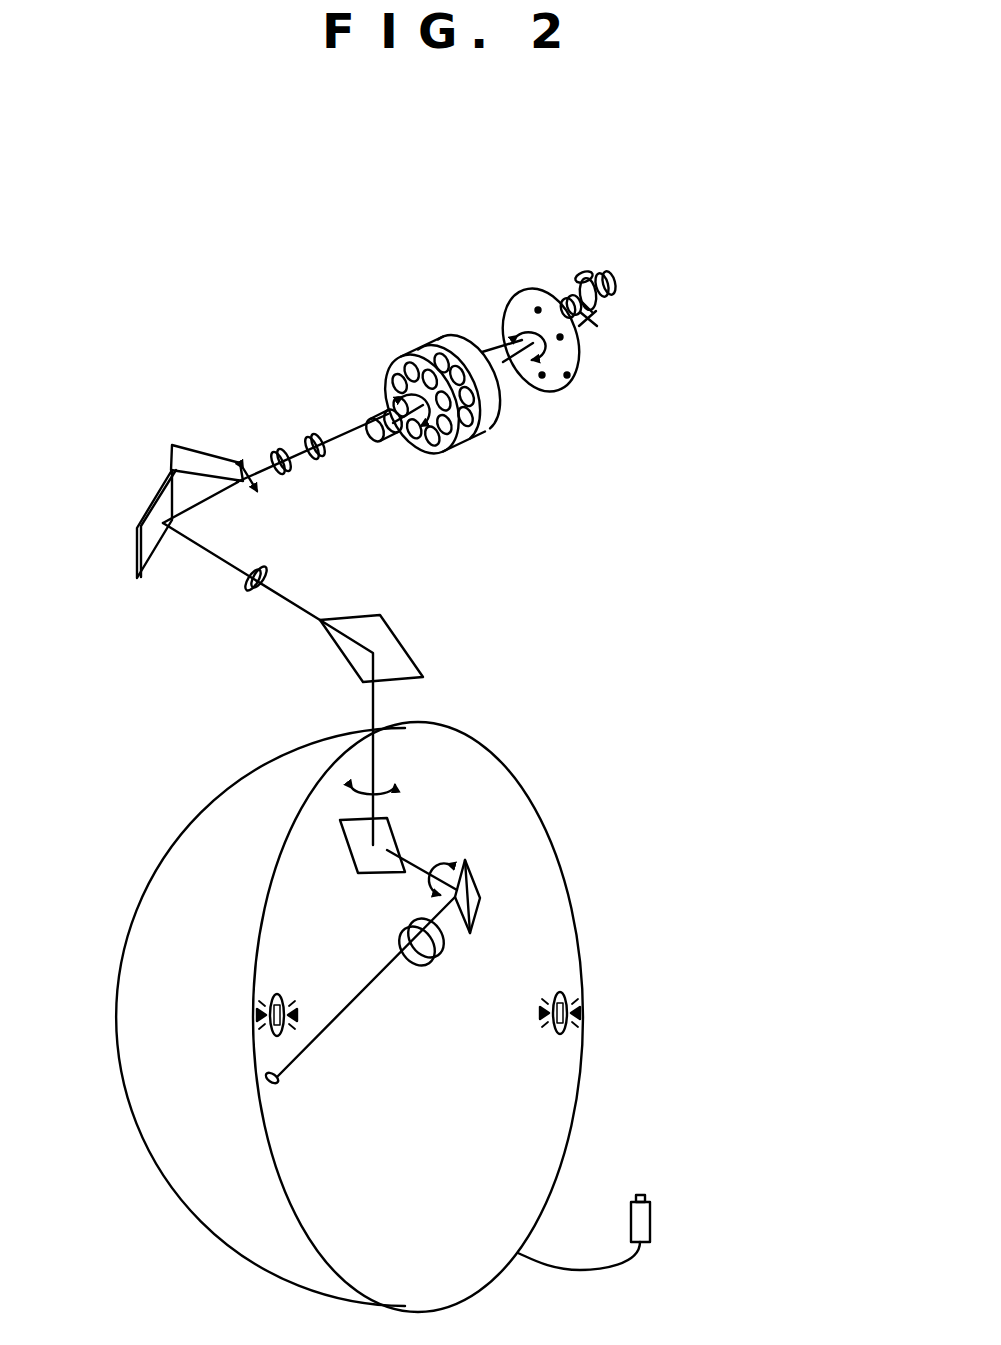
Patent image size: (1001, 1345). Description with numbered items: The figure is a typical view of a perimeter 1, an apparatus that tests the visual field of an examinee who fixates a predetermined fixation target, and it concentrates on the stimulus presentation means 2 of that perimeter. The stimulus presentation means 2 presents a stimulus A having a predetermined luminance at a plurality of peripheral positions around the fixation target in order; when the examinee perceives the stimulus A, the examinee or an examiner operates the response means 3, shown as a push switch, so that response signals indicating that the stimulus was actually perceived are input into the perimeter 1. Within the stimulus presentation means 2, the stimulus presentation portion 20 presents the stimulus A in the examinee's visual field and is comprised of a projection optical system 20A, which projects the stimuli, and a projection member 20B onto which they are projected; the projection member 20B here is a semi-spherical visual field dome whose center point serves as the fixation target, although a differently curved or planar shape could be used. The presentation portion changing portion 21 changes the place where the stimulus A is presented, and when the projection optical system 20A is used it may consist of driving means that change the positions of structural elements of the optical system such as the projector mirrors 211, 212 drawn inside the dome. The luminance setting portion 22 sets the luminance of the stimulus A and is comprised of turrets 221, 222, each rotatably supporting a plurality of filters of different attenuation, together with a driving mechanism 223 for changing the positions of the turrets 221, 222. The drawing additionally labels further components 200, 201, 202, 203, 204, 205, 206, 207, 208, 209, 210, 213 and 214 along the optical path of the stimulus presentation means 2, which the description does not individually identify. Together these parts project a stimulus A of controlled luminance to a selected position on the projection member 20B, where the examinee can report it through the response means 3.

The perimeter 1 is at (743, 290).
The stimulus presentation means 2 is at (697, 550).
The response means 3 is at (654, 1203).
The stimulus presentation portion 20 is at (627, 662).
The projection optical system 20A is at (537, 582).
The projection member 20B is at (508, 783).
The presentation portion changing portion 21 is at (545, 877).
The luminance setting portion 22 is at (510, 447).
The light source lamp 200 is at (614, 285).
The lamp holder 201 is at (585, 283).
The aperture ring 202 is at (570, 296).
The rotary disk 203 is at (510, 290).
The filter wheel 204 is at (424, 353).
The lens 205 is at (316, 458).
The lens 206 is at (272, 453).
The mirror plate 207 is at (180, 443).
The prism 208 is at (137, 580).
The lens 209 is at (242, 592).
The prism 210 is at (406, 648).
The projector mirror 211 is at (347, 865).
The projector mirror 212 is at (480, 900).
The projection lens 213 is at (447, 952).
The position sensor 214 is at (255, 1040).
The turret 221 is at (385, 364).
The turret 222 is at (417, 353).
The driving mechanism 223 is at (393, 445).
The stimulus A is at (278, 1085).